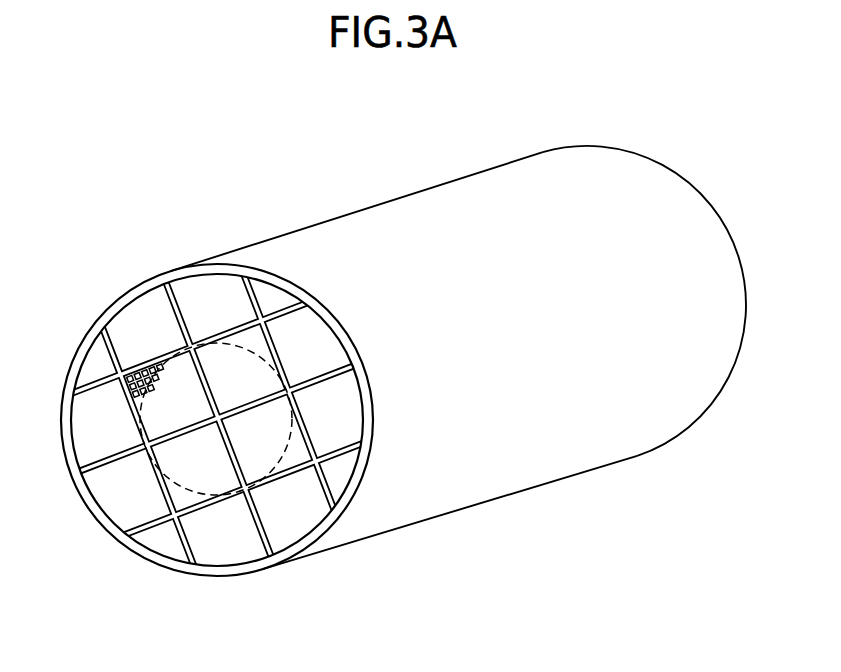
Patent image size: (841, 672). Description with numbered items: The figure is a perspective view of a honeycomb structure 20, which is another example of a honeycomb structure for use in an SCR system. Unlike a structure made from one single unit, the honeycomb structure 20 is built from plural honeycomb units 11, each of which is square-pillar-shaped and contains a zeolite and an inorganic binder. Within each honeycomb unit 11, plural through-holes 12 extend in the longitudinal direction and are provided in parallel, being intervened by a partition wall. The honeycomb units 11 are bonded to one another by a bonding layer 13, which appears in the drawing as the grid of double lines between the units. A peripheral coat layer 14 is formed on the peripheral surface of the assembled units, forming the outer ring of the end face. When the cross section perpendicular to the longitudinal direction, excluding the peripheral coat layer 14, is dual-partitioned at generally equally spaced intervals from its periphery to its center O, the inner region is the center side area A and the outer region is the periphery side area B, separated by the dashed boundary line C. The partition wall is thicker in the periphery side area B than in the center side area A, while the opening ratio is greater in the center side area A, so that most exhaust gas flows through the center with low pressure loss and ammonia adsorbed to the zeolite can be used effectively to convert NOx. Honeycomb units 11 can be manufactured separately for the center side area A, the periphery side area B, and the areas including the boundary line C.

The honeycomb unit 11 is at (210, 452).
The through-holes 12 is at (155, 392).
The bonding layer 13 is at (336, 492).
The peripheral coat layer 14 is at (128, 290).
The honeycomb structure 20 is at (341, 214).
The center side area A is at (243, 376).
The periphery side area B is at (333, 412).
The boundary line C is at (286, 452).
The center O is at (239, 430).